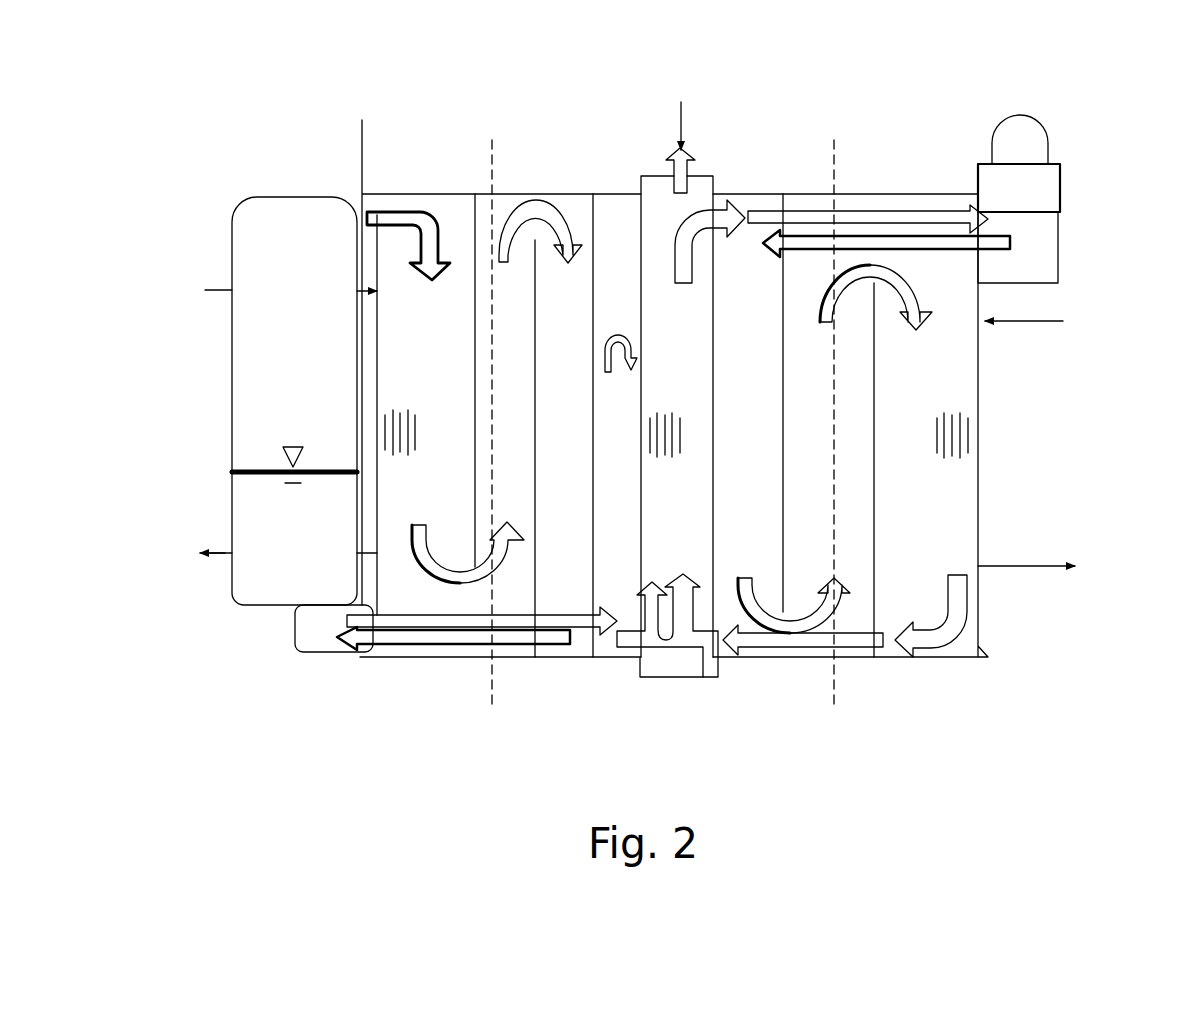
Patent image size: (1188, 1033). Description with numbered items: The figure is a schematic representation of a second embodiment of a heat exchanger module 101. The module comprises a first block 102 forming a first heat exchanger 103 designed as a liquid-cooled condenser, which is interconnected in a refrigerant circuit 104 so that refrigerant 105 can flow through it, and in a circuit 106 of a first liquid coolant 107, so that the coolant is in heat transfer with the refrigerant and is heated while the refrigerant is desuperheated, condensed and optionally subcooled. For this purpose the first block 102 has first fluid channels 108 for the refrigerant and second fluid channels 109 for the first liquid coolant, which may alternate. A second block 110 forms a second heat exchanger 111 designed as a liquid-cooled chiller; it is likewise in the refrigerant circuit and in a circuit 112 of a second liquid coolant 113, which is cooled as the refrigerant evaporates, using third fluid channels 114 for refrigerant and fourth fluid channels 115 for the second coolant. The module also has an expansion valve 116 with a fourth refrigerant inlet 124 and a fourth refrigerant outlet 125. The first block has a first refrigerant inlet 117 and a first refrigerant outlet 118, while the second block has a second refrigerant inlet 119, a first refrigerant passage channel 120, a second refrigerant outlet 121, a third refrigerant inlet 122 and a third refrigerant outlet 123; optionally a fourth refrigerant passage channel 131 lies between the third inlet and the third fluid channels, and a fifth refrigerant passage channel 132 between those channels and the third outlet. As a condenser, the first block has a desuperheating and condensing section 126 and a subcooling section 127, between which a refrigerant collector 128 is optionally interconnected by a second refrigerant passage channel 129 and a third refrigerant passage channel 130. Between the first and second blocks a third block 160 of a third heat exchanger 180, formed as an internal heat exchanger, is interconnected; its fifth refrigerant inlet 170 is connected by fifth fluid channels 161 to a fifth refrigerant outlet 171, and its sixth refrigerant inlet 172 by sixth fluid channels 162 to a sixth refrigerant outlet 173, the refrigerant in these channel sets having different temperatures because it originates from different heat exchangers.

The heat exchanger module 101 is at (1066, 104).
The first block 102 is at (533, 180).
The first heat exchanger 103 is at (499, 185).
The refrigerant circuit 104 is at (360, 150).
The refrigerant 105 is at (550, 205).
The circuit of a first liquid coolant 106 is at (212, 293).
The first liquid coolant 107 is at (207, 284).
The first fluid channels 108 is at (388, 433).
The second fluid channels 109 is at (398, 414).
The second block 110 is at (868, 185).
The second heat exchanger 111 is at (915, 175).
The circuit of a second liquid coolant 112 is at (1070, 320).
The second liquid coolant 113 is at (1060, 323).
The third fluid channels 114 is at (960, 420).
The fourth fluid channels 115 is at (955, 445).
The expansion valve 116 is at (1071, 163).
The first refrigerant inlet 117 is at (378, 217).
The first refrigerant outlet 118 is at (626, 655).
The second refrigerant inlet 119 is at (752, 208).
The first refrigerant passage channel 120 is at (815, 223).
The second refrigerant outlet 121 is at (980, 268).
The third refrigerant inlet 122 is at (980, 270).
The third refrigerant outlet 123 is at (732, 655).
The fourth refrigerant inlet 124 is at (1000, 212).
The fourth refrigerant outlet 125 is at (1012, 242).
The desuperheating and condensing section 126 is at (405, 598).
The subcooling section 127 is at (608, 223).
The refrigerant collector 128 is at (275, 208).
The second refrigerant passage channel 129 is at (448, 632).
The third refrigerant passage channel 130 is at (478, 618).
The fourth refrigerant passage channel 131 is at (802, 246).
The fifth refrigerant passage channel 132 is at (868, 648).
The third block 160 is at (655, 200).
The fifth fluid channels 161 is at (657, 430).
The sixth fluid channels 162 is at (668, 438).
The fifth refrigerant inlet 170 is at (638, 655).
The fifth refrigerant outlet 171 is at (708, 222).
The sixth refrigerant inlet 172 is at (698, 652).
The sixth refrigerant outlet 173 is at (704, 205).
The third heat exchanger 180 is at (695, 70).